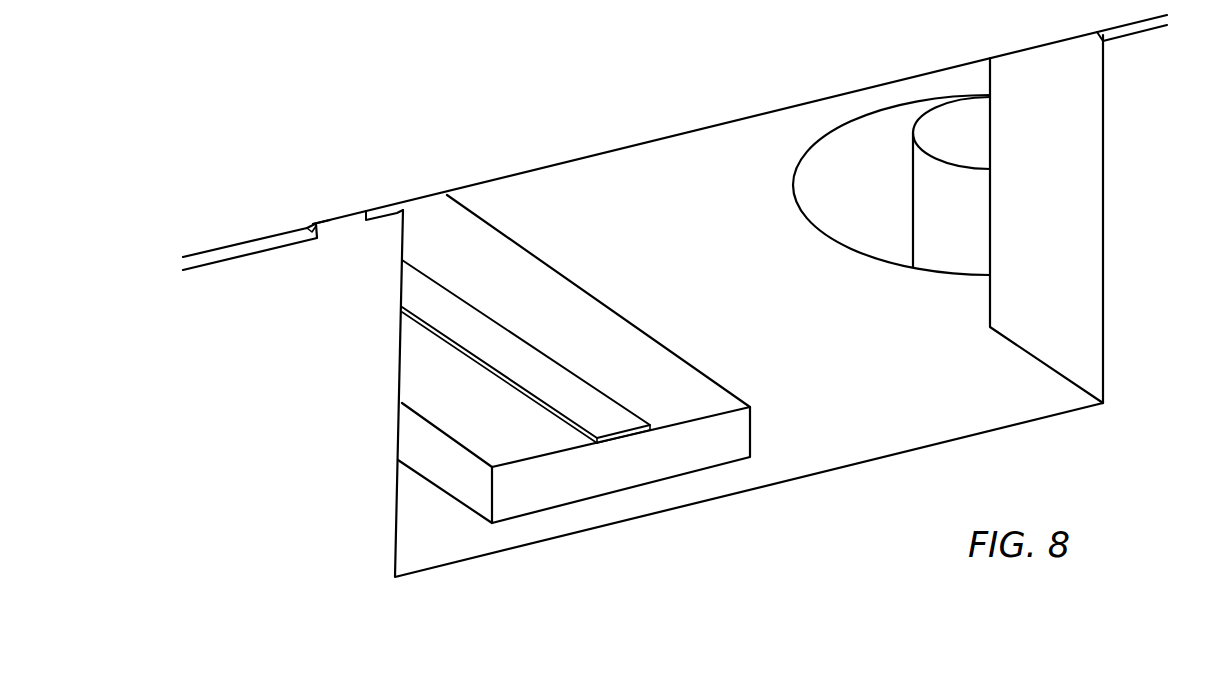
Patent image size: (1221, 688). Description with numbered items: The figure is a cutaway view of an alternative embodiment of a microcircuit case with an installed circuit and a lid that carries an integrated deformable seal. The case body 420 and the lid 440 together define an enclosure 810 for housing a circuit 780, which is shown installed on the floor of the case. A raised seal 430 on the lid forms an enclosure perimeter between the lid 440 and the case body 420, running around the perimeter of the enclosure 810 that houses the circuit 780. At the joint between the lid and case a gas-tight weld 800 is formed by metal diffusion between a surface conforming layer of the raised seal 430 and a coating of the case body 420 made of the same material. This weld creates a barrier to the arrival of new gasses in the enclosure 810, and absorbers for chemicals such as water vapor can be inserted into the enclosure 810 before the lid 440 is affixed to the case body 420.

The case body 420 is at (337, 527).
The lid 440 is at (172, 220).
The raised seal 430 is at (347, 222).
The gas-tight weld 800 is at (325, 222).
The circuit 780 is at (723, 393).
The enclosure 810 is at (840, 318).